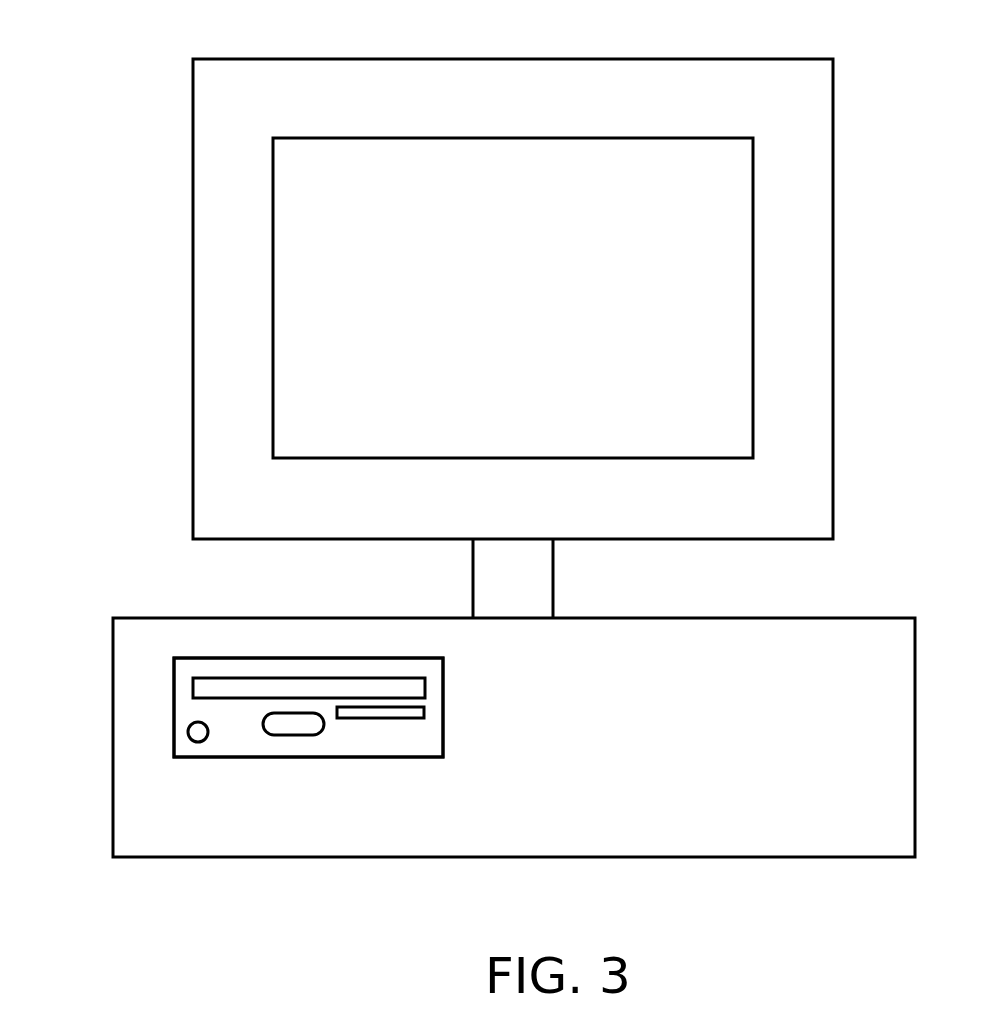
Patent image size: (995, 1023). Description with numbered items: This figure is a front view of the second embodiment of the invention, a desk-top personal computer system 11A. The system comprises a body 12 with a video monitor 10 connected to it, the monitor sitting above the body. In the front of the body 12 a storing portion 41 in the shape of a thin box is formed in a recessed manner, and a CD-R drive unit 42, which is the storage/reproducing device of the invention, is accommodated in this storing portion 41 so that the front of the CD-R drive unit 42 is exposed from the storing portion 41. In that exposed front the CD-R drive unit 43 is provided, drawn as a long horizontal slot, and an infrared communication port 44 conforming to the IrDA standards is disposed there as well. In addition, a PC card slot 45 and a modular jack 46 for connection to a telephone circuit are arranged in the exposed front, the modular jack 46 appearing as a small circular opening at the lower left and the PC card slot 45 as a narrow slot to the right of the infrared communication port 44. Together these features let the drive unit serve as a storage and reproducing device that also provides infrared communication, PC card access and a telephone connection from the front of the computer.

The video monitor 10 is at (758, 110).
The desk-top personal computer system 11A is at (253, 57).
The body 12 is at (810, 738).
The storing portion 41 is at (193, 662).
The CD-R drive unit 42 is at (158, 725).
The CD-R drive unit 43 is at (233, 688).
The infrared communication port 44 is at (294, 736).
The PC card slot 45 is at (413, 718).
The modular jack 46 is at (194, 742).